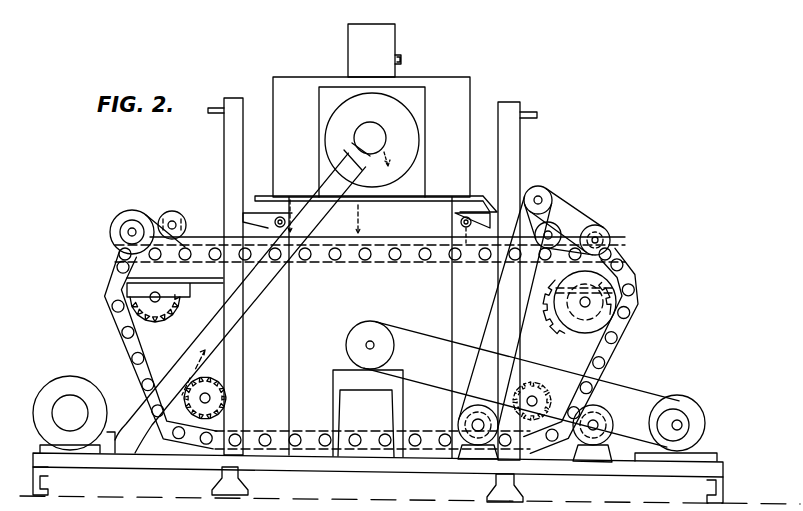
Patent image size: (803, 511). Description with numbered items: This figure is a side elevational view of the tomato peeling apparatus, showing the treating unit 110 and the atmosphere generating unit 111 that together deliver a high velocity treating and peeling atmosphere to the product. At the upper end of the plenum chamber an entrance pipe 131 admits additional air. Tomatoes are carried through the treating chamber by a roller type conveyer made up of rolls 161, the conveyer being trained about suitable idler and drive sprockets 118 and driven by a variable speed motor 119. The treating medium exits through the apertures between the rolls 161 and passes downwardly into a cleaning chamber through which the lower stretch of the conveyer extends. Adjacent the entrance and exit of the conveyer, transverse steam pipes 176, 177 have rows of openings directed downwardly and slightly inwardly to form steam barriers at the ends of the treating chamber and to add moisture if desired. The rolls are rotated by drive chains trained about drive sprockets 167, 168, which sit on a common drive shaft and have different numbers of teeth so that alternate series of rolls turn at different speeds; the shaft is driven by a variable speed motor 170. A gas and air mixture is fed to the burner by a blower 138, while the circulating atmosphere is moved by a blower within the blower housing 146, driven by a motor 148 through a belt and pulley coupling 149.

The treating unit 110 is at (473, 66).
The entrance pipe 131 is at (398, 58).
The atmosphere generating unit 111 is at (329, 151).
The transverse steam pipe 176 is at (275, 219).
The transverse steam pipe 177 is at (464, 216).
The drive sprocket 168 is at (112, 226).
The drive sprocket 167 is at (158, 229).
The idler and drive sprockets 118 is at (140, 308).
The rolls 161 is at (334, 264).
The blower 138 is at (82, 397).
The blower housing 146 is at (300, 368).
The belt and pulley coupling 149 is at (381, 330).
The variable speed motor 119 is at (600, 405).
The variable speed motor 170 is at (458, 418).
The motor 148 is at (686, 397).